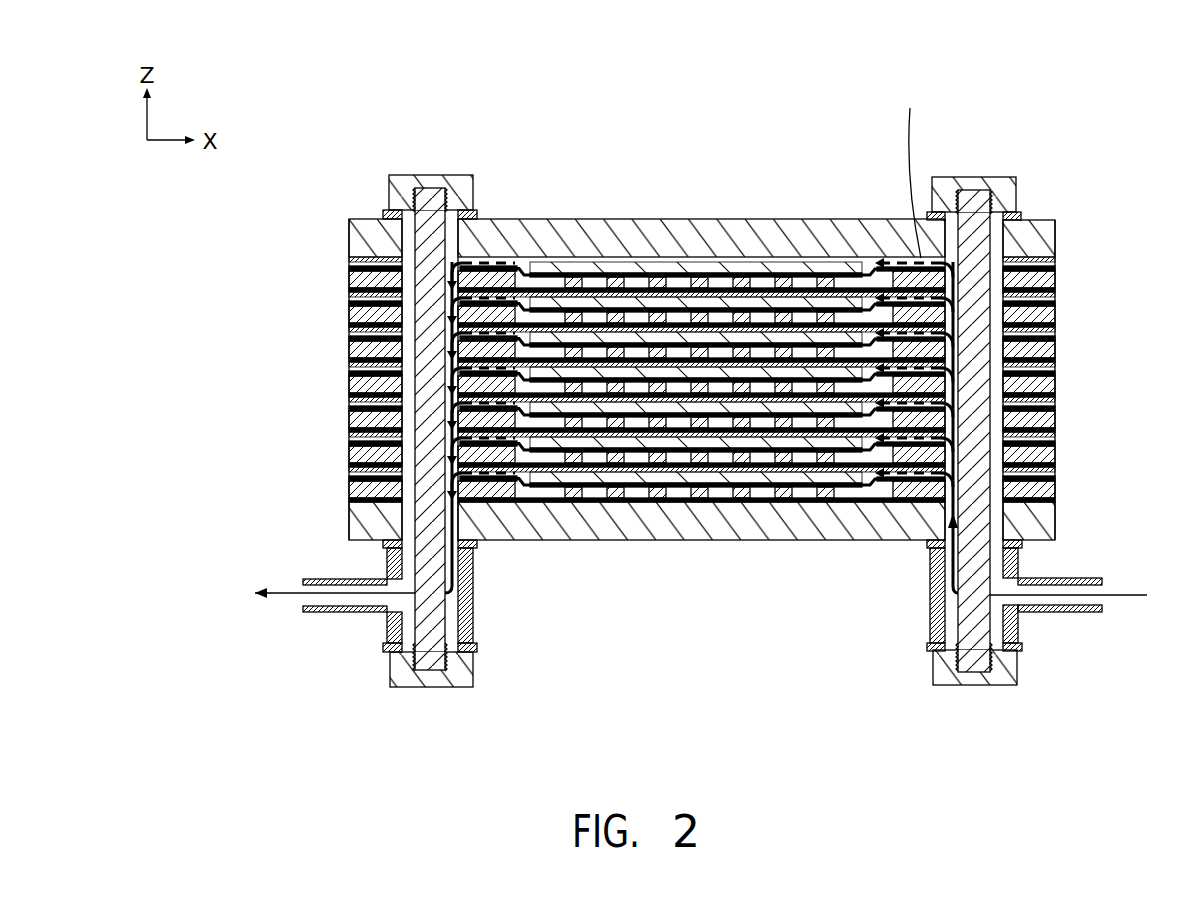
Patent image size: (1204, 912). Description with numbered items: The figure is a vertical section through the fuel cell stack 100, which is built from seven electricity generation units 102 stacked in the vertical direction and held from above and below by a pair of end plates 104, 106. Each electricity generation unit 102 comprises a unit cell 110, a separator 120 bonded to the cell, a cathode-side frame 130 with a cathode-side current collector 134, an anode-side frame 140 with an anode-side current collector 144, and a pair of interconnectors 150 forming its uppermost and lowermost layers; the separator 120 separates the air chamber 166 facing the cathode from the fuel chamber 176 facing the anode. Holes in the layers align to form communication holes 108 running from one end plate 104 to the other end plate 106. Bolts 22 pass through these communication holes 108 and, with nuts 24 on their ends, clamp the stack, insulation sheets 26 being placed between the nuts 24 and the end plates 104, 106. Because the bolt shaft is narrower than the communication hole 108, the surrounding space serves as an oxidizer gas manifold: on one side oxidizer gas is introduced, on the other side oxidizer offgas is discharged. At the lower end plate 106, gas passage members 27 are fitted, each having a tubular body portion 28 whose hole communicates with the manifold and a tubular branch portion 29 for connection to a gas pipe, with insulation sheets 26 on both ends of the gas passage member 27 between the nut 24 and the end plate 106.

The fuel cell stack 100 is at (693, 410).
The electricity generation unit 102 is at (340, 259).
The end plate 104 is at (348, 250).
The end plate 106 is at (348, 515).
The communication hole 108 is at (387, 250).
The unit cell 110 is at (727, 285).
The separator 120 is at (500, 278).
The cathode-side frame 130 is at (480, 275).
The anode-side frame 140 is at (470, 262).
The anode-side current collector 144 is at (700, 288).
The interconnector 150 is at (547, 288).
The cathode-side current collector 134 is at (780, 267).
The air chamber 166 is at (865, 260).
The fuel chamber 176 is at (852, 288).
The bolt 22 is at (418, 240).
The nut 24 is at (392, 178).
The insulation sheet 26 is at (383, 212).
The gas passage member 27 is at (703, 634).
The body portion 28 is at (387, 625).
The branch portion 29 is at (322, 612).